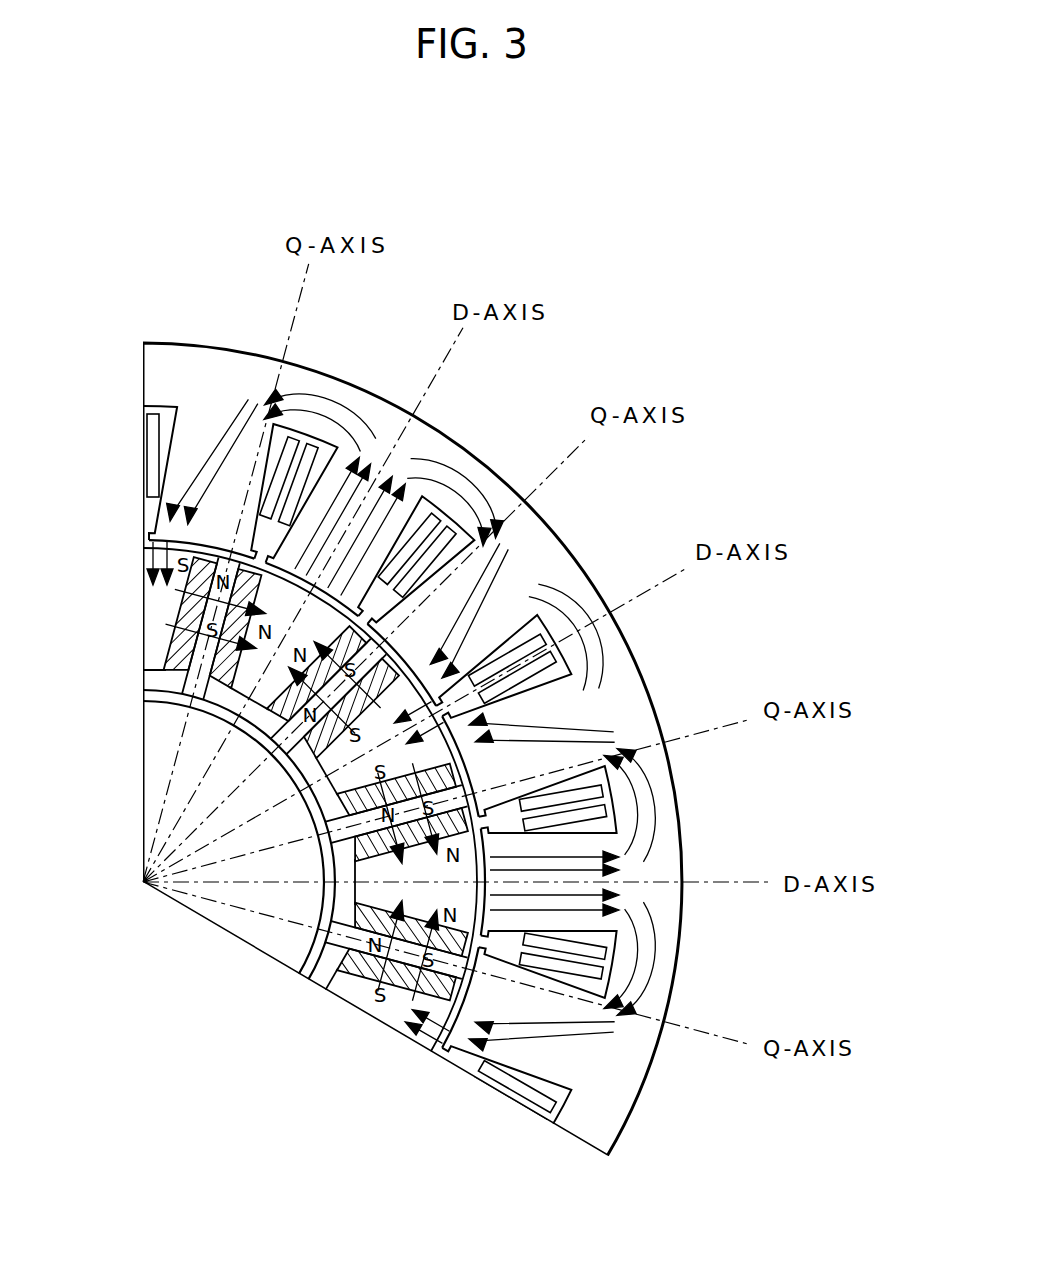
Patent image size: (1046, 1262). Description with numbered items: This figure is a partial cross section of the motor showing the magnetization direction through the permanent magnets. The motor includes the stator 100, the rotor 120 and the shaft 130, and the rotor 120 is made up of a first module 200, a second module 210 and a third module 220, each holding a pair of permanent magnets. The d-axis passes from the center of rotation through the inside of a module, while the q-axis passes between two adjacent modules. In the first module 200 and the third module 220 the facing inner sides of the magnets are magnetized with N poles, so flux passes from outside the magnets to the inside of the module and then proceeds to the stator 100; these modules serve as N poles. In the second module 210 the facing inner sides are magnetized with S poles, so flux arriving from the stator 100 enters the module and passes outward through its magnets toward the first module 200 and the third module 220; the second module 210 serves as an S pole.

The stator 100 is at (157, 373).
The rotor 120 is at (143, 612).
The shaft 130 is at (143, 775).
The first module 200 is at (218, 708).
The second module 210 is at (308, 798).
The third module 220 is at (330, 902).